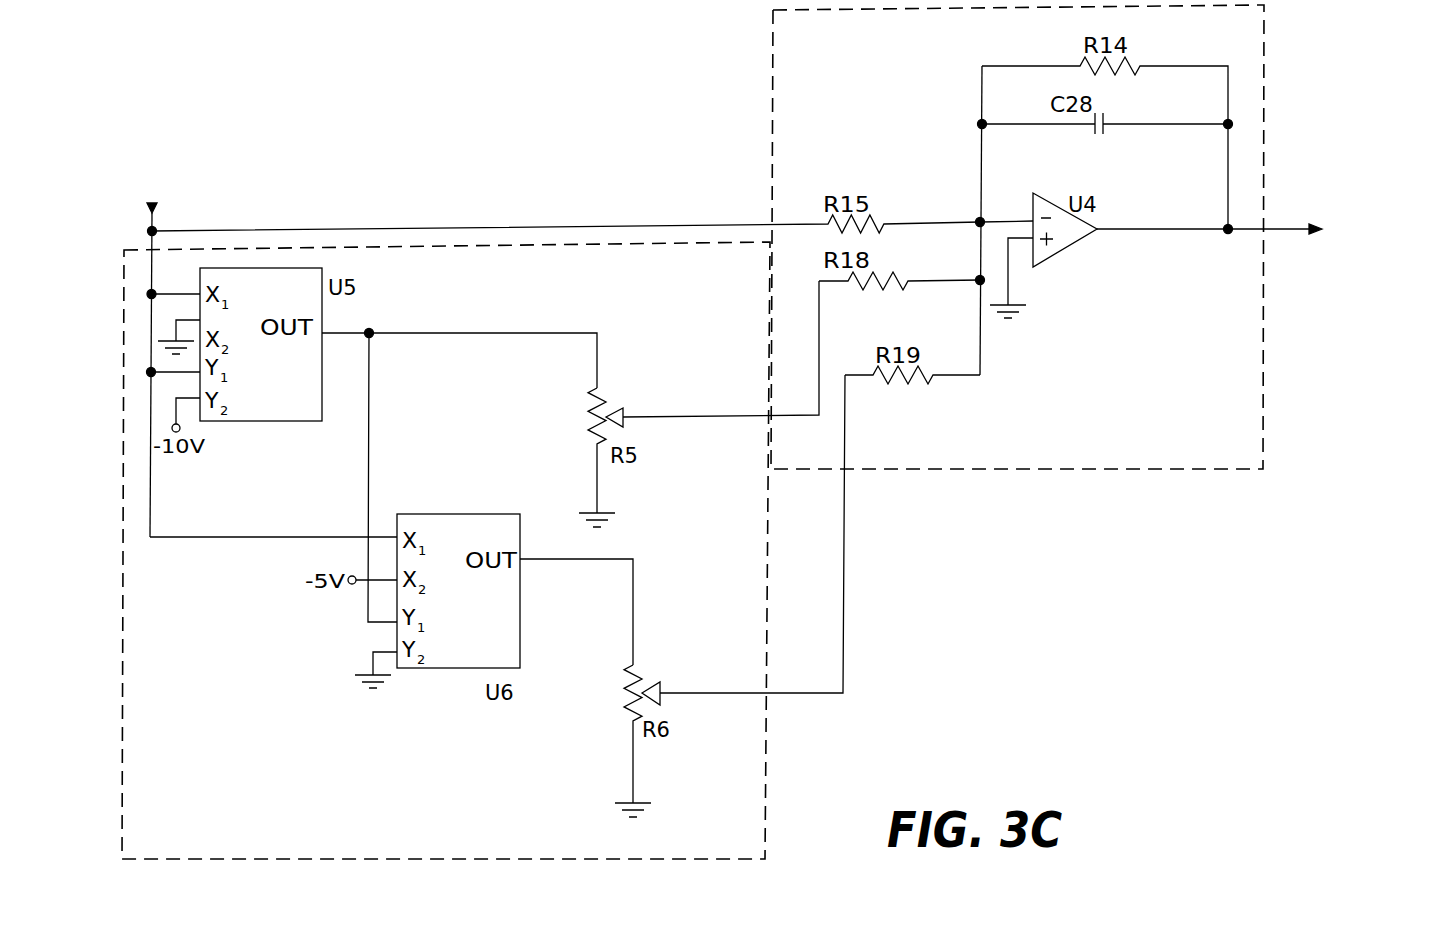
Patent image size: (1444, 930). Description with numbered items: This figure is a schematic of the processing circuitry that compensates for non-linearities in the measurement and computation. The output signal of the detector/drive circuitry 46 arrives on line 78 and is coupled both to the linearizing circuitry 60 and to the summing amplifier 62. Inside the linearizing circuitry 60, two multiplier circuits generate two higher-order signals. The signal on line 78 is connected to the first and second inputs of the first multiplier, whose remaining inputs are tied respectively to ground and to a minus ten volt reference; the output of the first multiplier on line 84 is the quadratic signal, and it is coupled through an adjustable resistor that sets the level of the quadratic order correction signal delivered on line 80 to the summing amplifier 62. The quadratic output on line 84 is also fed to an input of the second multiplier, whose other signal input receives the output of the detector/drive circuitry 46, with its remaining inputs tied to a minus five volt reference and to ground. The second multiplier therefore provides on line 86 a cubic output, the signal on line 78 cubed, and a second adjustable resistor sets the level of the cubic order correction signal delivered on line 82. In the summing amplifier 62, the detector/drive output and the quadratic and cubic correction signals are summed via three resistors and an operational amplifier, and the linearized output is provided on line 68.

The detector/drive circuitry 46 is at (201, 156).
The linearizing circuitry 60 is at (358, 831).
The summing amplifier 62 is at (1216, 438).
The line 68 is at (1286, 228).
The line 78 is at (151, 212).
The line 80 is at (658, 416).
The line 82 is at (738, 691).
The line 84 is at (419, 330).
The line 86 is at (634, 585).